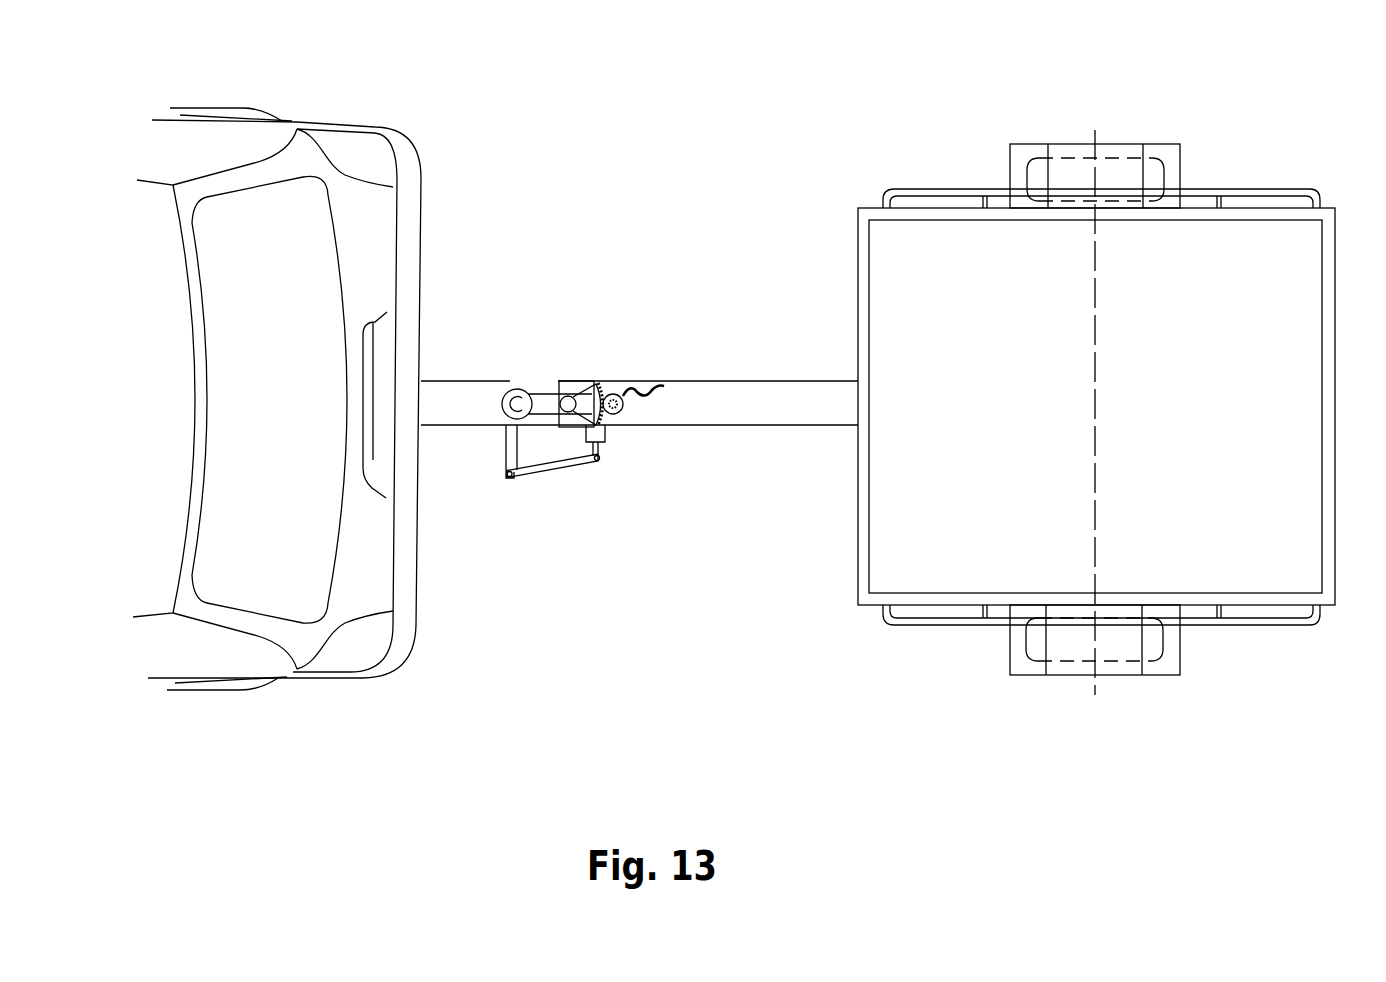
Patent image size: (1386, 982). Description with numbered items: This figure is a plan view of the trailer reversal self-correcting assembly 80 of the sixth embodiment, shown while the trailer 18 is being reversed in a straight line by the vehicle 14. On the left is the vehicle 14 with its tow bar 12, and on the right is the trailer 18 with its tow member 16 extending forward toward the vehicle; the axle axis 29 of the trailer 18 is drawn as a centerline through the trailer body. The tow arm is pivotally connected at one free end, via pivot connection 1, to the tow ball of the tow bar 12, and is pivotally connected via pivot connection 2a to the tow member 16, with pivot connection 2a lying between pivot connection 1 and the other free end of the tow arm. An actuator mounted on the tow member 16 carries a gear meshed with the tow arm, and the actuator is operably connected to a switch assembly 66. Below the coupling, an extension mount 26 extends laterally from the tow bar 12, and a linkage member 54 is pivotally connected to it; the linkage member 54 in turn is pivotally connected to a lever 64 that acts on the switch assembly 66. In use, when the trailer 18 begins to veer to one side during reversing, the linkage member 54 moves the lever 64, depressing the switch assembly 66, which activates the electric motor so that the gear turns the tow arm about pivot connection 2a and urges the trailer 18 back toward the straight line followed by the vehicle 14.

The trailer reversal self-correcting assembly 80 is at (642, 160).
The vehicle 14 is at (400, 648).
The tow bar 12 is at (467, 395).
The tow member 16 is at (767, 402).
The pivot connection 1 is at (520, 391).
The pivot connection 2a is at (580, 392).
The extension mount 26 is at (508, 453).
The linkage member 54 is at (555, 465).
The lever 64 is at (600, 450).
The switch assembly 66 is at (605, 434).
The trailer 18 is at (867, 597).
The axle axis 29 is at (1096, 240).